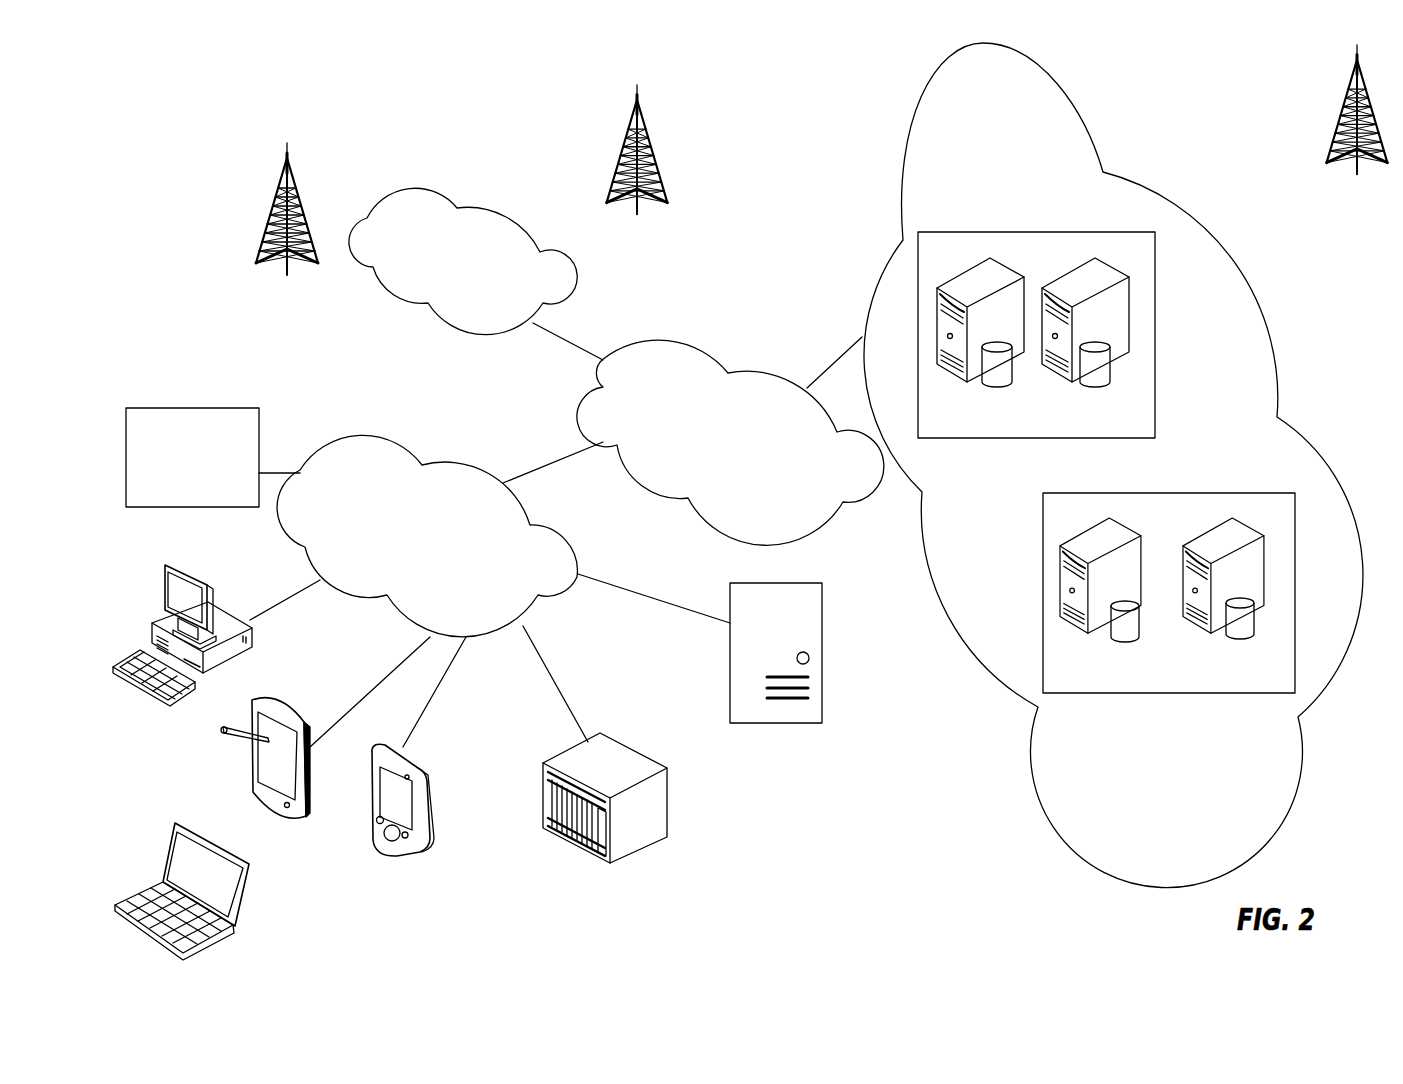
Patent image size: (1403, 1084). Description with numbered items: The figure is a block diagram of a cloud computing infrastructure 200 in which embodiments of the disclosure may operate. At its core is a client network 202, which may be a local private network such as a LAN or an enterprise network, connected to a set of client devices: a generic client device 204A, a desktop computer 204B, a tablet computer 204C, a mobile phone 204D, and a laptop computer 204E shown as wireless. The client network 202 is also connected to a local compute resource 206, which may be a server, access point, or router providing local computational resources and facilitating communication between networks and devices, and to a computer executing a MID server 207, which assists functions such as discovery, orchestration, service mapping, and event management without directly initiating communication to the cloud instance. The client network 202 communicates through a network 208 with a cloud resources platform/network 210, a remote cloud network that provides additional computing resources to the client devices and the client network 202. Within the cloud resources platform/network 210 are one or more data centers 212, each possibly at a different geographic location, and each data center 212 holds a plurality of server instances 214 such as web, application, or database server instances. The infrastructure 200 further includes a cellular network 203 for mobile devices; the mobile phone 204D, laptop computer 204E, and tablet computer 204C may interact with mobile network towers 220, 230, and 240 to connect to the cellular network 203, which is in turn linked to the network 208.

The cloud computing infrastructure 200 is at (373, 130).
The client network 202 is at (392, 443).
The cellular network 203 is at (488, 208).
The client device 204A is at (223, 408).
The desktop computer 204B is at (195, 570).
The tablet computer 204C is at (277, 702).
The mobile phone 204D is at (423, 773).
The laptop computer 204E is at (252, 868).
The local compute resource 206 is at (610, 738).
The MID server 207 is at (772, 723).
The network 208 is at (662, 342).
The cloud resources platform/network 210 is at (1203, 212).
The data center 212 is at (962, 232).
The server instance 214 is at (988, 383).
The mobile network tower 220 is at (637, 166).
The mobile network tower 230 is at (287, 225).
The mobile network tower 240 is at (1357, 127).